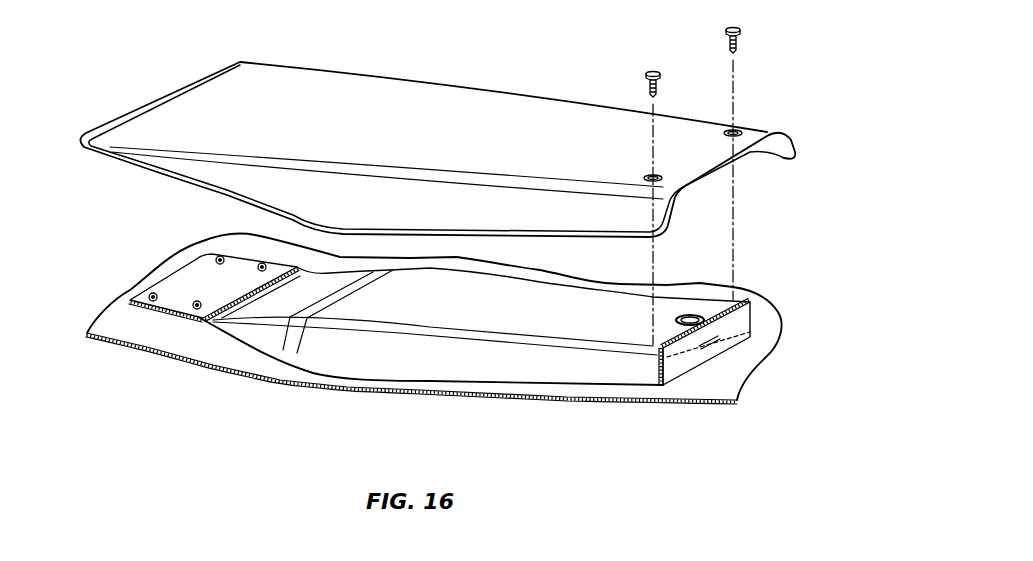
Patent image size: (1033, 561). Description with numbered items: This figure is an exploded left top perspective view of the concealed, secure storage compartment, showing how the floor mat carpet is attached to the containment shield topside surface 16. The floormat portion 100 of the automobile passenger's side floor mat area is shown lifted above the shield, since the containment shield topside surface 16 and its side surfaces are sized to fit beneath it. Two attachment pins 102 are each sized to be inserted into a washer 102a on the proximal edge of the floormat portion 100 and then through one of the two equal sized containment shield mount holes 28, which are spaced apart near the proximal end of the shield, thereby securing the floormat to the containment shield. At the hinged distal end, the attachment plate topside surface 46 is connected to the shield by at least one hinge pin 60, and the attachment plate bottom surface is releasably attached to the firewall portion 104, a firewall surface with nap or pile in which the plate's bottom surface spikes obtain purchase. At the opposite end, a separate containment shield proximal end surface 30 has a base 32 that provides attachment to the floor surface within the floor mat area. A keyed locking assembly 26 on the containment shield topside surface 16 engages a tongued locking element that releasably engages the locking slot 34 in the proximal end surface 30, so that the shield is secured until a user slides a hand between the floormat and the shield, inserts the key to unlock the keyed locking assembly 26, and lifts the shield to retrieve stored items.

The floormat portion 100 is at (409, 132).
The attachment pin 102 is at (645, 74).
The washer 102a is at (732, 128).
The firewall portion 104 is at (290, 378).
The containment shield topside surface 16 is at (480, 312).
The attachment plate topside surface 46 is at (226, 265).
The hinge pin 60 is at (203, 322).
The keyed locking assembly 26 is at (686, 314).
The containment shield mount hole 28 is at (735, 300).
The containment shield proximal end surface 30 is at (680, 363).
The base 32 is at (663, 388).
The locking slot 34 is at (707, 352).